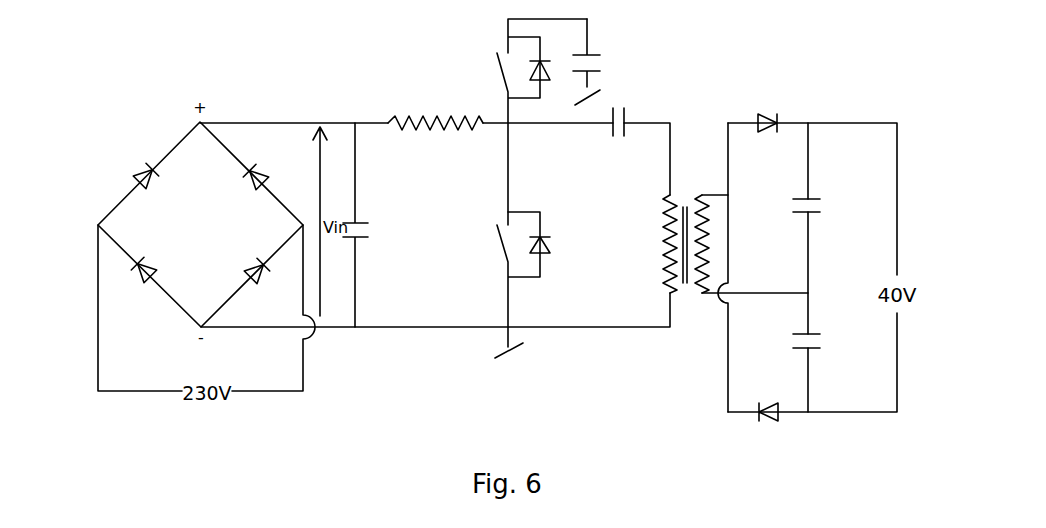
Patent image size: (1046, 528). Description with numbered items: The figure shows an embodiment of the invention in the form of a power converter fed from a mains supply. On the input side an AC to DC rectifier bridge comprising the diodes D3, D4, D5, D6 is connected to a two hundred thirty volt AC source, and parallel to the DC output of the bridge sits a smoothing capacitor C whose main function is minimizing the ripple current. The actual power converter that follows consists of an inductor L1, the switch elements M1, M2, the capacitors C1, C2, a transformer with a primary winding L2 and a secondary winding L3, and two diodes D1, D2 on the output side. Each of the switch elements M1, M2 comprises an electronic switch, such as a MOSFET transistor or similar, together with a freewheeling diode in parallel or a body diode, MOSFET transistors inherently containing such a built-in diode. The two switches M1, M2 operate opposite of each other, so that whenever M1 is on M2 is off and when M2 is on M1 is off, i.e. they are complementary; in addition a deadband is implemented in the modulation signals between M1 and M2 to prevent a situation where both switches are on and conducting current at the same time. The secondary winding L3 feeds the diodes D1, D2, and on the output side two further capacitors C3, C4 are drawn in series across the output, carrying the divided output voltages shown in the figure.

The diode D1 is at (765, 111).
The diode D2 is at (767, 400).
The rectifier bridge diode D3 is at (136, 174).
The rectifier bridge diode D4 is at (265, 172).
The rectifier bridge diode D5 is at (136, 274).
The rectifier bridge diode D6 is at (265, 274).
The smoothing capacitor C is at (364, 225).
The capacitor C1 is at (618, 131).
The capacitor C2 is at (600, 62).
The output capacitor (10V) C3 is at (814, 203).
The output capacitor (30V) C4 is at (814, 340).
The inductor L1 is at (435, 111).
The primary winding L2 is at (661, 244).
The secondary winding L3 is at (751, 244).
The switch element M1 is at (506, 285).
The switch element M2 is at (526, 122).